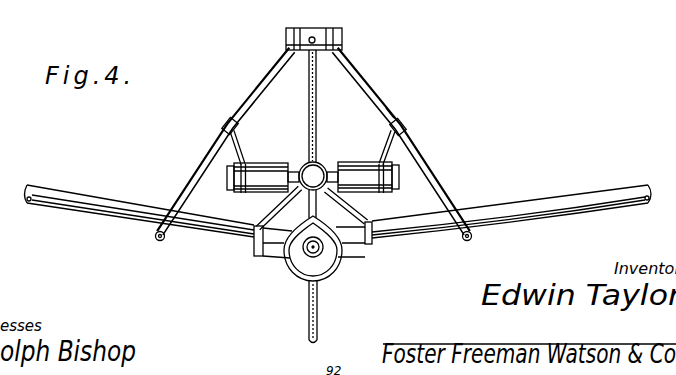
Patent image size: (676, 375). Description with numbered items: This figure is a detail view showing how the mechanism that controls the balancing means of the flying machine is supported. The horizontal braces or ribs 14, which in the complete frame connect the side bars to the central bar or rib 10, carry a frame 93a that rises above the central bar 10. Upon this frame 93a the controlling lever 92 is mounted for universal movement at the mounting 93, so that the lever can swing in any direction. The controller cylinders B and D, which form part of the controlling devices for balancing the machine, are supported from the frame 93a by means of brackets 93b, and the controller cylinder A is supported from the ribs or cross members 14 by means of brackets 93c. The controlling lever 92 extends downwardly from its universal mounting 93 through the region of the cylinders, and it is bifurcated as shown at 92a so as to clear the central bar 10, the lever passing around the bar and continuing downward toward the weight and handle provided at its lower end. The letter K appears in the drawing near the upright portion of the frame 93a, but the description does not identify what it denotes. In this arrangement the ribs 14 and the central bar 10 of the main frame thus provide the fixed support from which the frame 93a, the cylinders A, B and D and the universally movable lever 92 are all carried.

The universal mounting 93 is at (313, 29).
The strut frame K is at (314, 144).
The controlling lever 92 is at (324, 99).
The frame 93a is at (388, 101).
The brackets 93b is at (237, 136).
The controller cylinder D is at (268, 164).
The controller cylinder A is at (317, 162).
The controller cylinder B is at (386, 192).
The brackets 93c is at (394, 204).
The braces or ribs 14 is at (123, 217).
The central bar or rib 10 is at (290, 266).
The bifurcated portion 92a is at (334, 270).